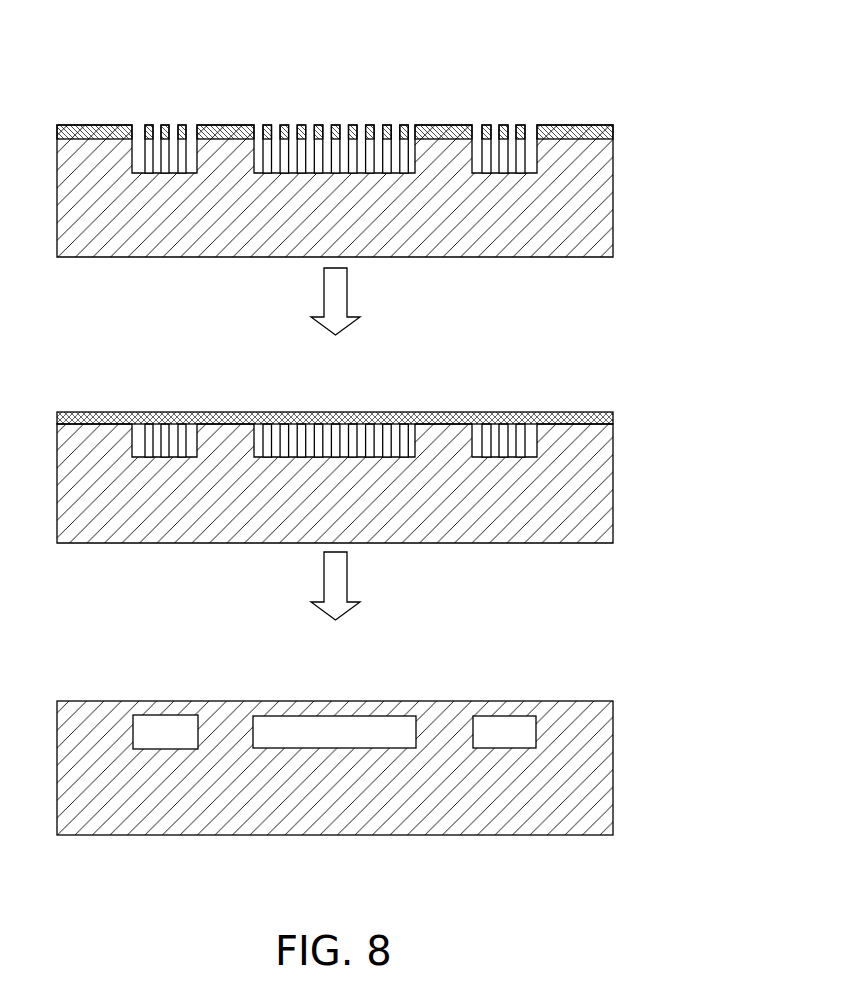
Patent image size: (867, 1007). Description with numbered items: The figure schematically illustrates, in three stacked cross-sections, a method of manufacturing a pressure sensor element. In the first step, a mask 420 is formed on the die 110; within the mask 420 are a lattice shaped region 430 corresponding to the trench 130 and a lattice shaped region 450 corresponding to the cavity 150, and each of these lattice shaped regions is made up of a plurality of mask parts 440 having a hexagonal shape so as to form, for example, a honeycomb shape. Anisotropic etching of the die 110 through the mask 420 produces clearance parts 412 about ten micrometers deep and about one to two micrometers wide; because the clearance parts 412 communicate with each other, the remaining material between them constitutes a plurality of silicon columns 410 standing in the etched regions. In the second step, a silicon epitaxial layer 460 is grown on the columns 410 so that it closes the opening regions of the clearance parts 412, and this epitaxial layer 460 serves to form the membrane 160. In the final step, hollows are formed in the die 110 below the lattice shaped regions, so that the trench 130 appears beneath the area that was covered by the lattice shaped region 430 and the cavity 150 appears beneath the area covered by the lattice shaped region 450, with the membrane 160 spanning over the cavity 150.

The die 110 is at (597, 200).
The columns 410 is at (146, 157).
The clearance parts 412 is at (155, 155).
The mask 420 is at (228, 134).
The lattice shaped region 430 is at (345, 96).
The mask parts 440 is at (384, 130).
The lattice shaped region 450 is at (334, 95).
The epitaxial layer 460 is at (222, 410).
The trench 130 is at (165, 727).
The cavity 150 is at (397, 726).
The membrane 160 is at (325, 711).